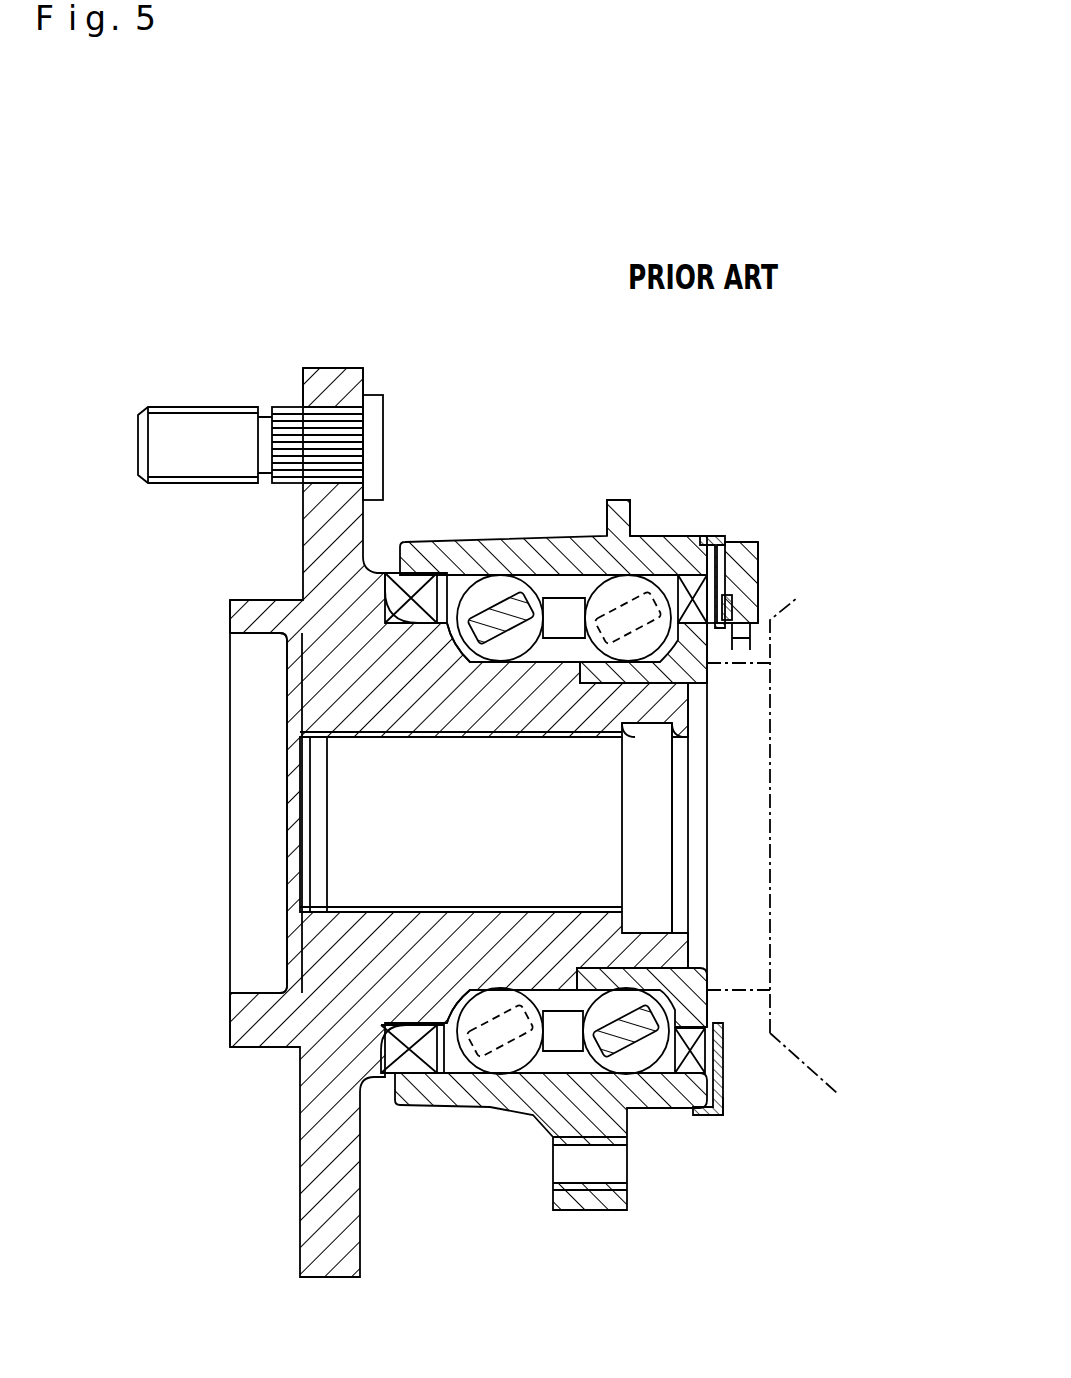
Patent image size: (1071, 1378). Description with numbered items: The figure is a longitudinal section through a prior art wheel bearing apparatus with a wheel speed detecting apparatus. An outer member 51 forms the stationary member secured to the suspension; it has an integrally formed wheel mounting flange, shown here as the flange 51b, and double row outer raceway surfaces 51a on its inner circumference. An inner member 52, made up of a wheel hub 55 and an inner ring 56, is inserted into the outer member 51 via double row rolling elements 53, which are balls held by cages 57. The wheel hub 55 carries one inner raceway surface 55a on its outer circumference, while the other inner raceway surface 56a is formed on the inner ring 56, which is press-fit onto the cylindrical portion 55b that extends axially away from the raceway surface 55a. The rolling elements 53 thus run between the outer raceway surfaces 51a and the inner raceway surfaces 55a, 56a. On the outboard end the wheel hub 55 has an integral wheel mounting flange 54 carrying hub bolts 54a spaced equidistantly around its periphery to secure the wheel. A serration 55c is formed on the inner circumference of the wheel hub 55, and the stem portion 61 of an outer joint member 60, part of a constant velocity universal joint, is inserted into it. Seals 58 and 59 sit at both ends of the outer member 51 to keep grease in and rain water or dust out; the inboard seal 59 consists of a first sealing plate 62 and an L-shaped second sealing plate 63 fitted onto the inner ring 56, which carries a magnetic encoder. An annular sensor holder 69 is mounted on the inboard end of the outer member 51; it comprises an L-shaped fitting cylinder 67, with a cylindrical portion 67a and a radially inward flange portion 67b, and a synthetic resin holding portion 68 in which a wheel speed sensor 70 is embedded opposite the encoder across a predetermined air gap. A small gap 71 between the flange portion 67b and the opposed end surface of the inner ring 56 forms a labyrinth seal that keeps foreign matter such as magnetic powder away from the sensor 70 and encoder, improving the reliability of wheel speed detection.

The outer member 51 is at (540, 542).
The outer raceway surfaces 51a is at (550, 1120).
The outer ring flange 51b is at (598, 1210).
The inner member 52 is at (385, 712).
The rolling elements 53 is at (500, 600).
The wheel mounting flange 54 is at (334, 370).
The hub bolts 54a is at (205, 432).
The wheel hub 55 is at (325, 698).
The inner raceway surface 55a is at (477, 625).
The cylindrical portion 55b is at (595, 1000).
The serration 55c is at (383, 907).
The inner ring 56 is at (705, 970).
The inner raceway surface 56a is at (641, 970).
The cages 57 is at (535, 660).
The seal 58 is at (413, 605).
The seal 59 is at (680, 536).
The outer joint member 60 is at (790, 820).
The stem portion 61 is at (683, 720).
The first sealing plate 62 is at (650, 1113).
The second sealing plate 63 is at (707, 1062).
The fitting cylinder 67 is at (708, 536).
The cylindrical portion 67a is at (700, 1117).
The flange portion 67b is at (723, 1097).
The holding portion 68 is at (757, 560).
The sensor holder 69 is at (753, 542).
The wheel speed sensor 70 is at (740, 607).
The small gap 71 is at (713, 630).